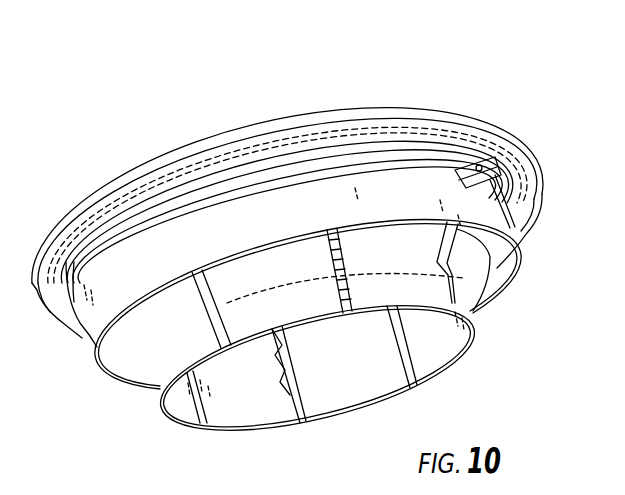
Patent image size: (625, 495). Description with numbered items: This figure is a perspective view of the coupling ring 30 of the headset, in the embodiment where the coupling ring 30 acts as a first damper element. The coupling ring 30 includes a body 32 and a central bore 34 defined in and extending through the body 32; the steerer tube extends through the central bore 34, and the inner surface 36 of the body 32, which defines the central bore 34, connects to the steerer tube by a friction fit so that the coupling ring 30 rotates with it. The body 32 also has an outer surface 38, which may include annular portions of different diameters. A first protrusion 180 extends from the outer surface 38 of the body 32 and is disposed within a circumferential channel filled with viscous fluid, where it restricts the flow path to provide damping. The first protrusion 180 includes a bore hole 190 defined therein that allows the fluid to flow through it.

The coupling ring 30 is at (380, 88).
The body 32 is at (291, 195).
The central bore 34 is at (350, 363).
The inner surface 36 is at (433, 343).
The outer surface 38 is at (420, 296).
The first protrusion 180 is at (490, 196).
The bore hole 190 is at (482, 152).